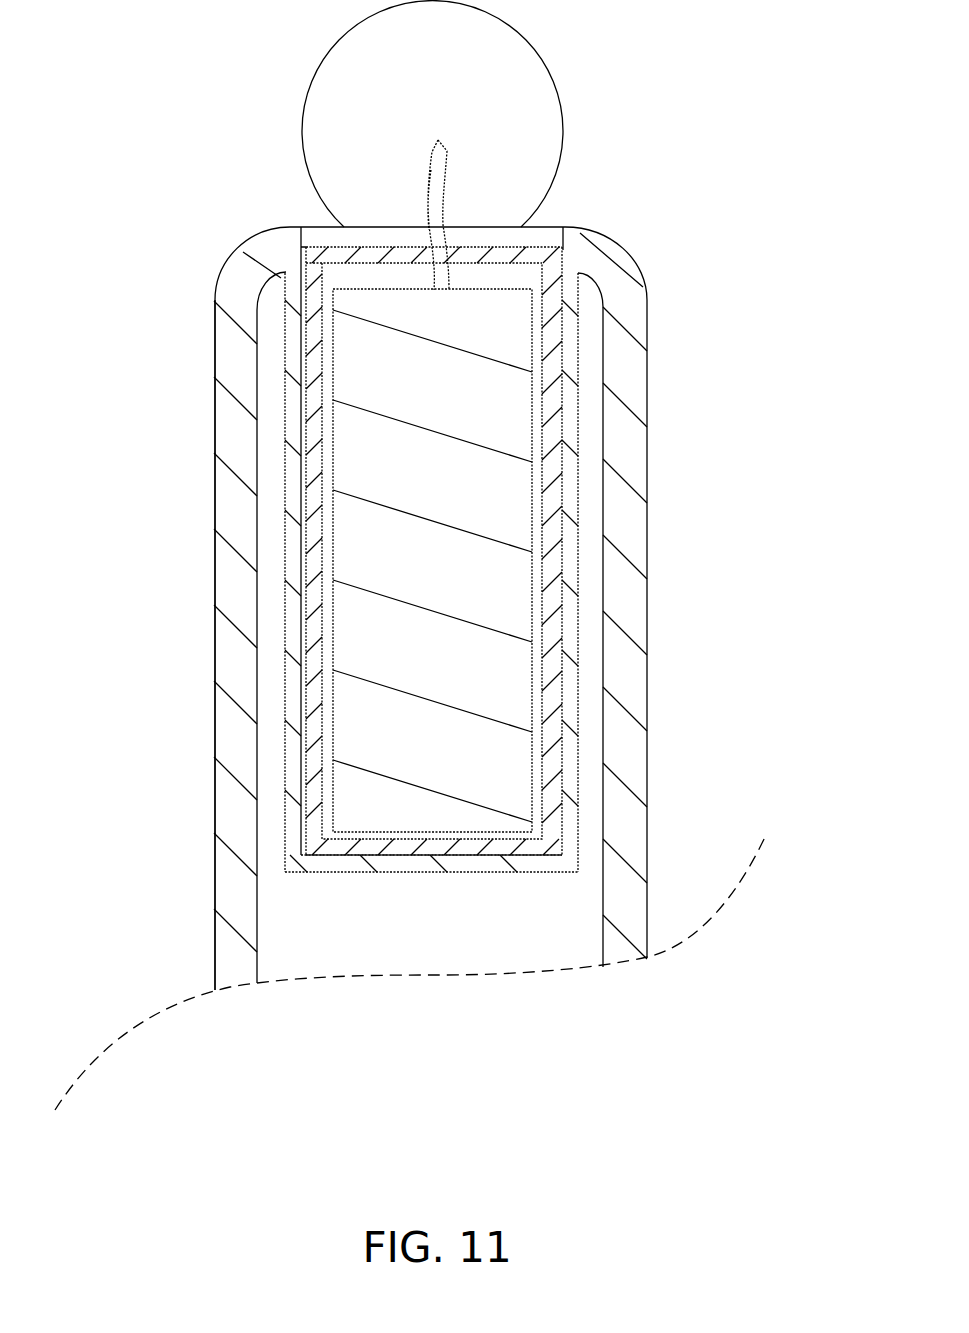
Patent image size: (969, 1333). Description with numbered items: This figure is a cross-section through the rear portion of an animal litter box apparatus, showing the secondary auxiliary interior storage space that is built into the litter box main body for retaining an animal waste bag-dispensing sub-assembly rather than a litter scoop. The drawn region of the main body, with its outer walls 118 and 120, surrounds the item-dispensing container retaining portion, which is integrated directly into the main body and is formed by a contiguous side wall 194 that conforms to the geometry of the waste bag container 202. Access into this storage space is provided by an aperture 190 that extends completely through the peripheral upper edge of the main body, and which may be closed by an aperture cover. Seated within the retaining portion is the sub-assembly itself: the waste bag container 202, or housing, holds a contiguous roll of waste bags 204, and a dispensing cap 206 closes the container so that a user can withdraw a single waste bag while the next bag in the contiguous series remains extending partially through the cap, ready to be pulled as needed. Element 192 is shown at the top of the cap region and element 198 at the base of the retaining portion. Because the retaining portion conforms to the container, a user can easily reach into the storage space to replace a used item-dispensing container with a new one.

The housing 118 is at (630, 535).
The housing side wall 120 is at (228, 583).
The aperture 190 is at (549, 236).
The ball electrode 192 is at (415, 110).
The contiguous side wall 194 is at (571, 464).
The cup bottom 198 is at (453, 873).
The waste bag container 202 is at (552, 394).
The contiguous roll of waste bags 204 is at (408, 402).
The dispensing cap 206 is at (347, 249).